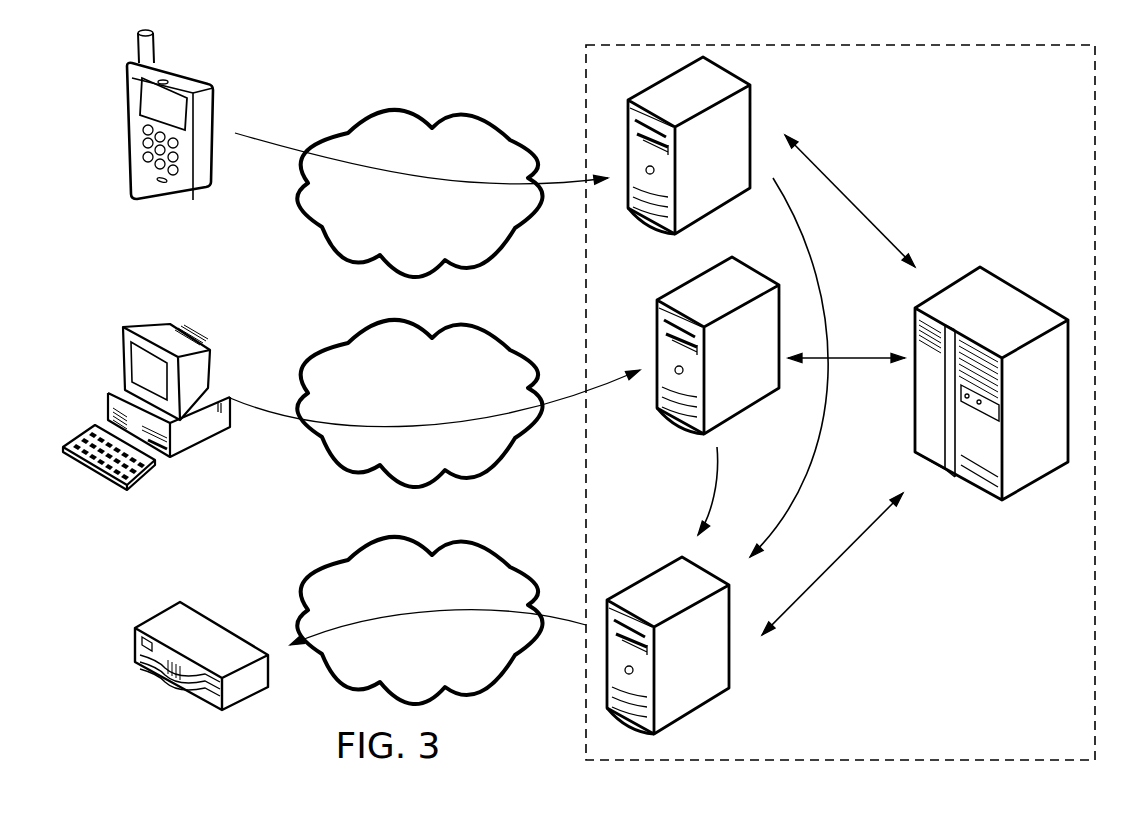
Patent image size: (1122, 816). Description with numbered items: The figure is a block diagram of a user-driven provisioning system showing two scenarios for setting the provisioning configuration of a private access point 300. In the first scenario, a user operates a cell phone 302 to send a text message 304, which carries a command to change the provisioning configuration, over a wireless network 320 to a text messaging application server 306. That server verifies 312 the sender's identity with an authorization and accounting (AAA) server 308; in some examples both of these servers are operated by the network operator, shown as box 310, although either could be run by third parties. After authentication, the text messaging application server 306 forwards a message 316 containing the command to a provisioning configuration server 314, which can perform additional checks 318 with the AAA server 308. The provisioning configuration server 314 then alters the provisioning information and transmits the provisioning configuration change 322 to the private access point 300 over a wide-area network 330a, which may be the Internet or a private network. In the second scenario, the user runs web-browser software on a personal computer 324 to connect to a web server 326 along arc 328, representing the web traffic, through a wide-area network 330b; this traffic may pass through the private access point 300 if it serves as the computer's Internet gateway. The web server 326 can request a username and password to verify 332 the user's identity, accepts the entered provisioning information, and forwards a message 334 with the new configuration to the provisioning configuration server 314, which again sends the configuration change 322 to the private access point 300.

The private access point 300 is at (213, 708).
The cell phone 302 is at (207, 190).
The text message 304 is at (400, 178).
The text messaging application server 306 is at (753, 98).
The authorization and accounting (AAA) server 308 is at (980, 493).
The network operator 310 is at (1036, 749).
The verification / communications 312 is at (868, 222).
The provisioning configuration server 314 is at (687, 718).
The message 316 is at (790, 505).
The additional checks 318 is at (806, 591).
The wireless network 320 is at (396, 245).
The provisioning configuration change 322 is at (372, 619).
The personal computer 324 is at (203, 443).
The web server 326 is at (730, 424).
The web traffic 328 is at (398, 423).
The wide-area network 330a is at (365, 581).
The wide-area network 330b is at (430, 381).
The verification 332 is at (843, 358).
The message 334 is at (717, 507).